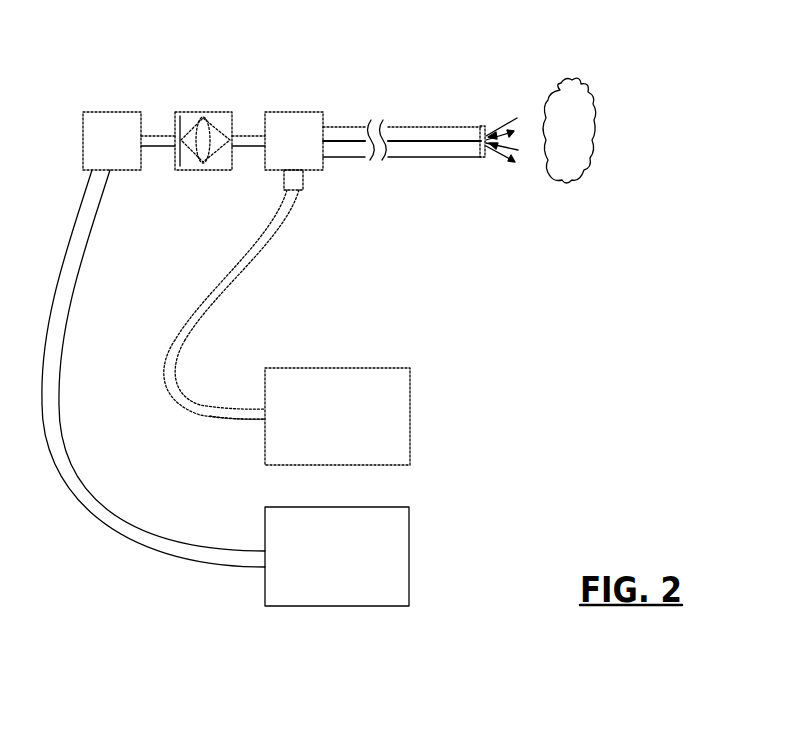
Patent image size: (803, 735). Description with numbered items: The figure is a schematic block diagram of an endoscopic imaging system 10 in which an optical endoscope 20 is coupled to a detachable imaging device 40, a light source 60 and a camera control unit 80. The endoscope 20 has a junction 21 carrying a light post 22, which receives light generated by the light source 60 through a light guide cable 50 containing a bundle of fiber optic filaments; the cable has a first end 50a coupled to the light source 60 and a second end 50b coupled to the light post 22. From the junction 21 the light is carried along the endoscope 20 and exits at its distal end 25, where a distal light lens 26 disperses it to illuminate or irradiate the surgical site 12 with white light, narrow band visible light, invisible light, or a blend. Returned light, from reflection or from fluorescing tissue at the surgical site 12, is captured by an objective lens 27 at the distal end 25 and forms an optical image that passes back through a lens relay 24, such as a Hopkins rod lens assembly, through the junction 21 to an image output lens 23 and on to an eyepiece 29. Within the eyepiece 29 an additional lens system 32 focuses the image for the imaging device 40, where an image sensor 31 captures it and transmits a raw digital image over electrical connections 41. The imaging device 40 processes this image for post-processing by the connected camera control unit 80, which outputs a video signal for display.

The endoscopic imaging system 10 is at (562, 434).
The surgical site 12 is at (558, 190).
The optical endoscope 20 is at (380, 182).
The junction 21 is at (282, 92).
The light post 22 is at (303, 192).
The image output lens 23 is at (255, 140).
The lens relay 24 is at (383, 125).
The distal end 25 is at (476, 108).
The distal light lens 26 is at (490, 157).
The objective lens 27 is at (488, 125).
The eyepiece 29 is at (195, 92).
The image sensor 31 is at (178, 164).
The lens system 32 is at (203, 166).
The imaging device 40 is at (106, 92).
The electrical connections 41 is at (143, 135).
The light guide cable 50 is at (188, 333).
The first end 50a is at (249, 417).
The second end 50b is at (293, 205).
The light source 60 is at (410, 371).
The camera control unit 80 is at (409, 555).